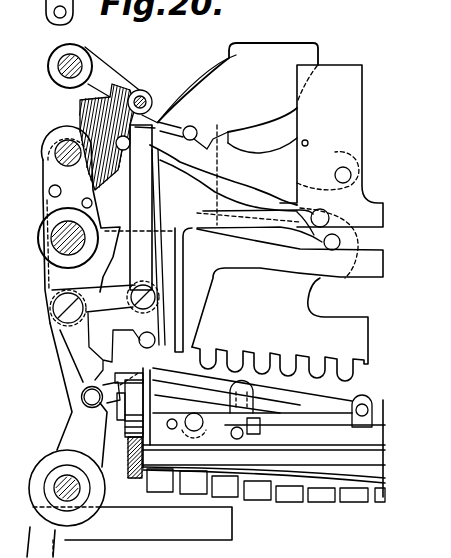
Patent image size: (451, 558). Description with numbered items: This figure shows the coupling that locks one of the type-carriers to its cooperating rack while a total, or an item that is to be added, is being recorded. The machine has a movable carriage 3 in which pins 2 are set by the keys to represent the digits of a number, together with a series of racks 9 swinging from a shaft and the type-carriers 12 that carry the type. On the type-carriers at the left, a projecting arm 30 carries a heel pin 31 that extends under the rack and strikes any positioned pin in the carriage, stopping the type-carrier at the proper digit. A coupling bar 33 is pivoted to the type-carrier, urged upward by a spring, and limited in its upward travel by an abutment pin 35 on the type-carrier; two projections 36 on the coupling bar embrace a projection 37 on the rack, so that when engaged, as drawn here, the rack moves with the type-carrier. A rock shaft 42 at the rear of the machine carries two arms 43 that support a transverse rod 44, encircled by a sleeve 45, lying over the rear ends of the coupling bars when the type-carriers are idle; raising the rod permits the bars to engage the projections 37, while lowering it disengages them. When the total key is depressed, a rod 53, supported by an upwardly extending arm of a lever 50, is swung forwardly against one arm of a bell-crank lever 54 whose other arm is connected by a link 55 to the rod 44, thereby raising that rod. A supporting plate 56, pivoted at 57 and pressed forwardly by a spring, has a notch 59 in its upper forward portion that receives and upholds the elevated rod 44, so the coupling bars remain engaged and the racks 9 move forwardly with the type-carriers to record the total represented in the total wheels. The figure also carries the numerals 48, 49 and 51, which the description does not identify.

The pins 2 is at (352, 498).
The movable carriage 3 is at (264, 432).
The racks 9 is at (263, 212).
The type-carriers 12 is at (331, 171).
The projecting arms 30 is at (244, 290).
The heel pins 31 is at (121, 358).
The coupling bar 33 is at (257, 175).
The abutment pin 35 is at (309, 144).
The projections 36 is at (245, 187).
The projection 37 is at (193, 123).
The rock shaft 42 is at (48, 68).
The arms 43 is at (109, 79).
The rod 44 is at (146, 99).
The sleeve 45 is at (150, 116).
The pinion 48 is at (125, 425).
The plate 49 is at (148, 523).
The lever 50 is at (75, 540).
The lever hub 51 is at (68, 483).
The rod 53 is at (92, 406).
The bell-crank lever 54 is at (92, 305).
The link 55 is at (146, 235).
The supporting plate 56 is at (90, 125).
The pivot 57 is at (49, 191).
The notch 59 is at (136, 92).